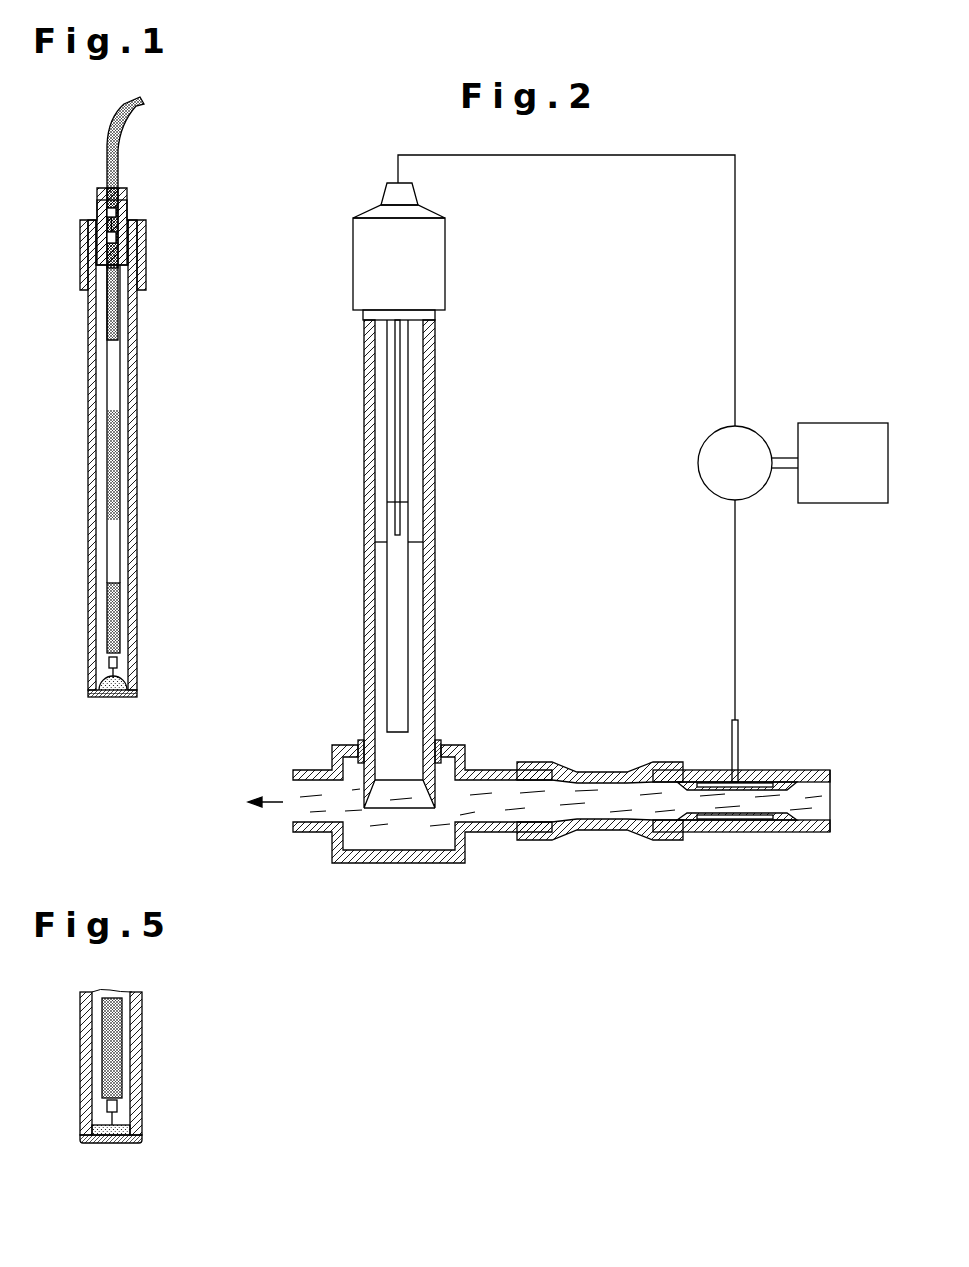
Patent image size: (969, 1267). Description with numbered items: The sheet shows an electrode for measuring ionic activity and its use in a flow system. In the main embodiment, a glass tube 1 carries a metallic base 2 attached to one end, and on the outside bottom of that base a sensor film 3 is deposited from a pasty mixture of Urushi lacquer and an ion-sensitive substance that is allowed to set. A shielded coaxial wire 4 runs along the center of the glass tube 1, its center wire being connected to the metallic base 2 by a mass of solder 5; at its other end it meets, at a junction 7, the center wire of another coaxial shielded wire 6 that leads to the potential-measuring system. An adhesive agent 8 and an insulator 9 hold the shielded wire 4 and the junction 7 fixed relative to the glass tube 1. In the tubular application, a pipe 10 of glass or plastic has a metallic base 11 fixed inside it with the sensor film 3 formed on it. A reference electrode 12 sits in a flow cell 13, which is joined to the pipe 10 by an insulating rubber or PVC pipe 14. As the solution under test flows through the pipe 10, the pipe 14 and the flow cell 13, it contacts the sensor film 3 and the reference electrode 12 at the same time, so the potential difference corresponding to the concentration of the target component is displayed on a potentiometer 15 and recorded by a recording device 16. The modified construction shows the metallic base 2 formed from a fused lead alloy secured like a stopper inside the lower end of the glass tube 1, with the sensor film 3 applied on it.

In FIG. 1, the glass tube 1 is at (133, 437).
In FIG. 5, the glass tube 1 is at (138, 1021).
In FIG. 1, the metallic base 2 is at (130, 688).
In FIG. 5, the metallic base 2 is at (120, 1130).
In FIG. 1, the sensor film 3 is at (110, 697).
In FIG. 2, the sensor film 3 is at (787, 818).
In FIG. 5, the sensor film 3 is at (115, 1143).
In FIG. 1, the shielded coaxial wire 4 is at (113, 583).
In FIG. 5, the shielded coaxial wire 4 is at (117, 1068).
In FIG. 1, the mass of solder 5 is at (108, 683).
In FIG. 1, the coaxial shielded wire 6 is at (120, 142).
In FIG. 1, the junction 7 is at (112, 225).
In FIG. 1, the adhesive agent 8 is at (88, 215).
In FIG. 1, the insulator 9 is at (100, 250).
In FIG. 2, the pipe 10 is at (813, 830).
In FIG. 2, the metallic base 11 is at (732, 818).
In FIG. 2, the reference electrode 12 is at (428, 485).
In FIG. 2, the flow cell 13 is at (407, 858).
In FIG. 2, the insulating rubber or PVC pipe 14 is at (602, 825).
In FIG. 2, the potentiometer 15 is at (713, 440).
In FIG. 2, the recording device 16 is at (838, 430).